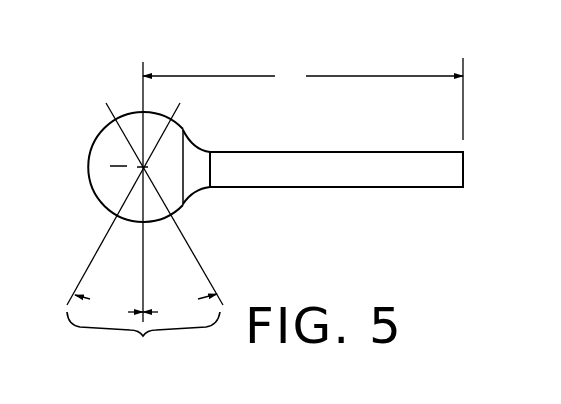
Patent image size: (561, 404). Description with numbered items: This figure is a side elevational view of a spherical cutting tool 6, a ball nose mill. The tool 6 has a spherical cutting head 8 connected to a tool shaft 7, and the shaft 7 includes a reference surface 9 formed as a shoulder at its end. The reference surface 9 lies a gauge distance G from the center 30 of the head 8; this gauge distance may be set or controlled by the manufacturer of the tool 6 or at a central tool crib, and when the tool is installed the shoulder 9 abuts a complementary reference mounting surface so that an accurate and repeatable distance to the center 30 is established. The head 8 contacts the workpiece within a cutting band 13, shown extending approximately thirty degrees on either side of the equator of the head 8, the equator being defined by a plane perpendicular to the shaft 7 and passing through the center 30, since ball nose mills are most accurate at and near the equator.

The tool 6 is at (335, 57).
The tool shaft 7 is at (352, 178).
The spherical cutting head 8 is at (133, 125).
The reference surface 9 is at (463, 160).
The cutting band 13 is at (143, 331).
The center 30 is at (92, 164).